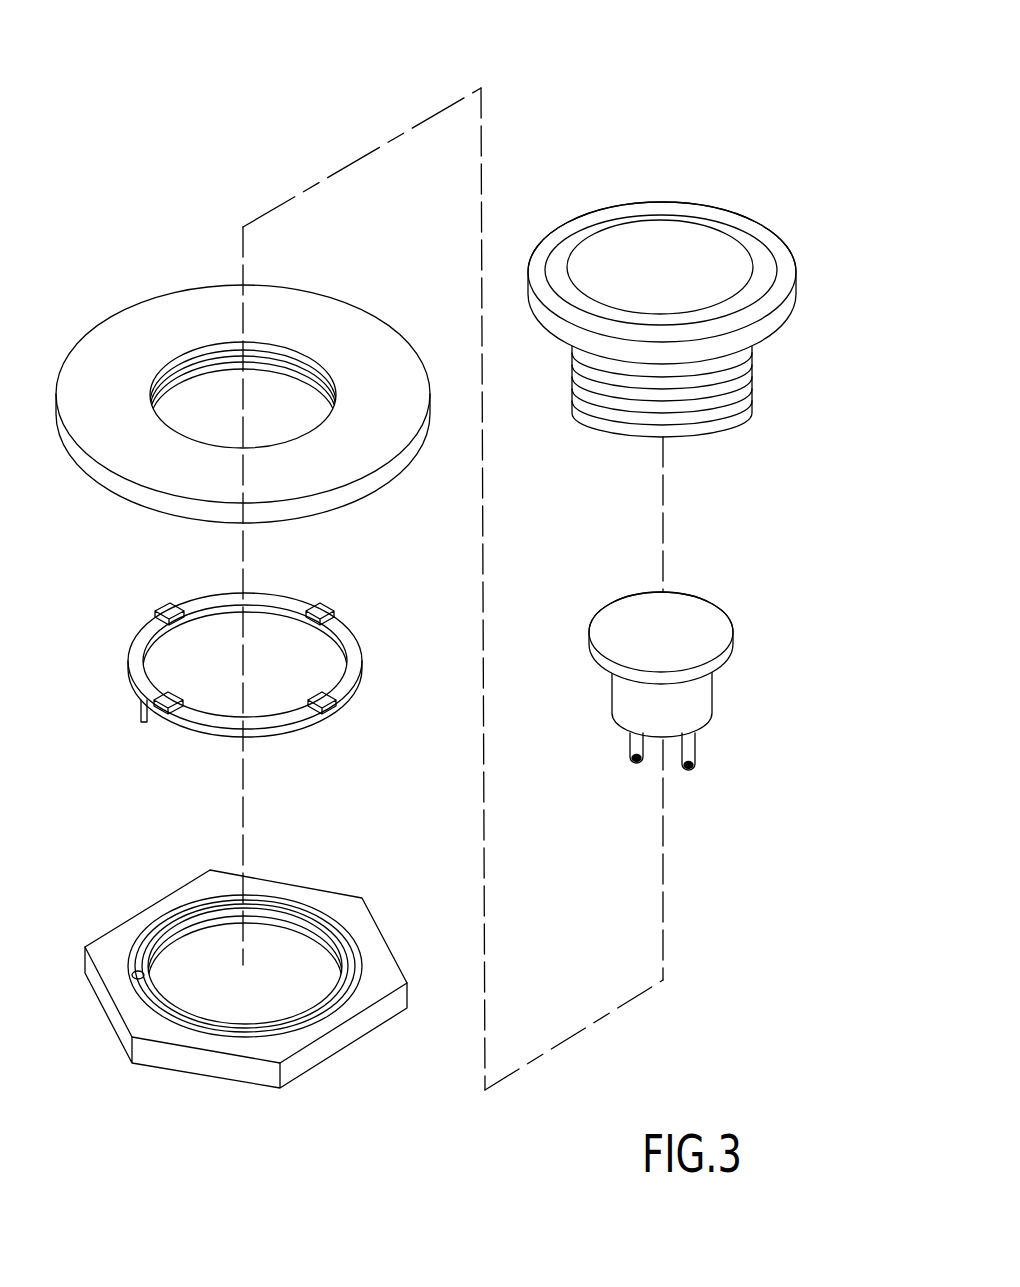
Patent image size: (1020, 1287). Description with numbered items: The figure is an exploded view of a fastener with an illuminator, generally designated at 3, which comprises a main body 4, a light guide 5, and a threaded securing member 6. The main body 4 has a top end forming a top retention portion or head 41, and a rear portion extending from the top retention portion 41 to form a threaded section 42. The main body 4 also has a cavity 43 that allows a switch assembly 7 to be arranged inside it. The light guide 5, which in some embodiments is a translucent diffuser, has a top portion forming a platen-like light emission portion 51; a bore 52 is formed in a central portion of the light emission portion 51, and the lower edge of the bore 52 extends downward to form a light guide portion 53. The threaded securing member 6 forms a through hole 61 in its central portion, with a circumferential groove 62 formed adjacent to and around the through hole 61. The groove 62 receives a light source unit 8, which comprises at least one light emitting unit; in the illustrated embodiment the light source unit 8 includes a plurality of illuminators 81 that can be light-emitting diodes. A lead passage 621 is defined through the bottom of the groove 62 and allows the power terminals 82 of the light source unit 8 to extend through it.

The fastener 3 is at (137, 78).
The main body 4 is at (735, 222).
The top retention portion 41 is at (770, 340).
The threaded section 42 is at (722, 400).
The cavity 43 is at (658, 262).
The light guide 5 is at (97, 275).
The light emission portion 51 is at (90, 357).
The bore 52 is at (222, 370).
The light guide portion 53 is at (103, 483).
The threaded securing member 6 is at (190, 1057).
The through hole 61 is at (208, 932).
The circumferential groove 62 is at (160, 937).
The lead passage 621 is at (135, 968).
The switch assembly 7 is at (712, 622).
The light source unit 8 is at (130, 656).
The illuminators 81 is at (168, 606).
The power terminals 82 is at (140, 714).